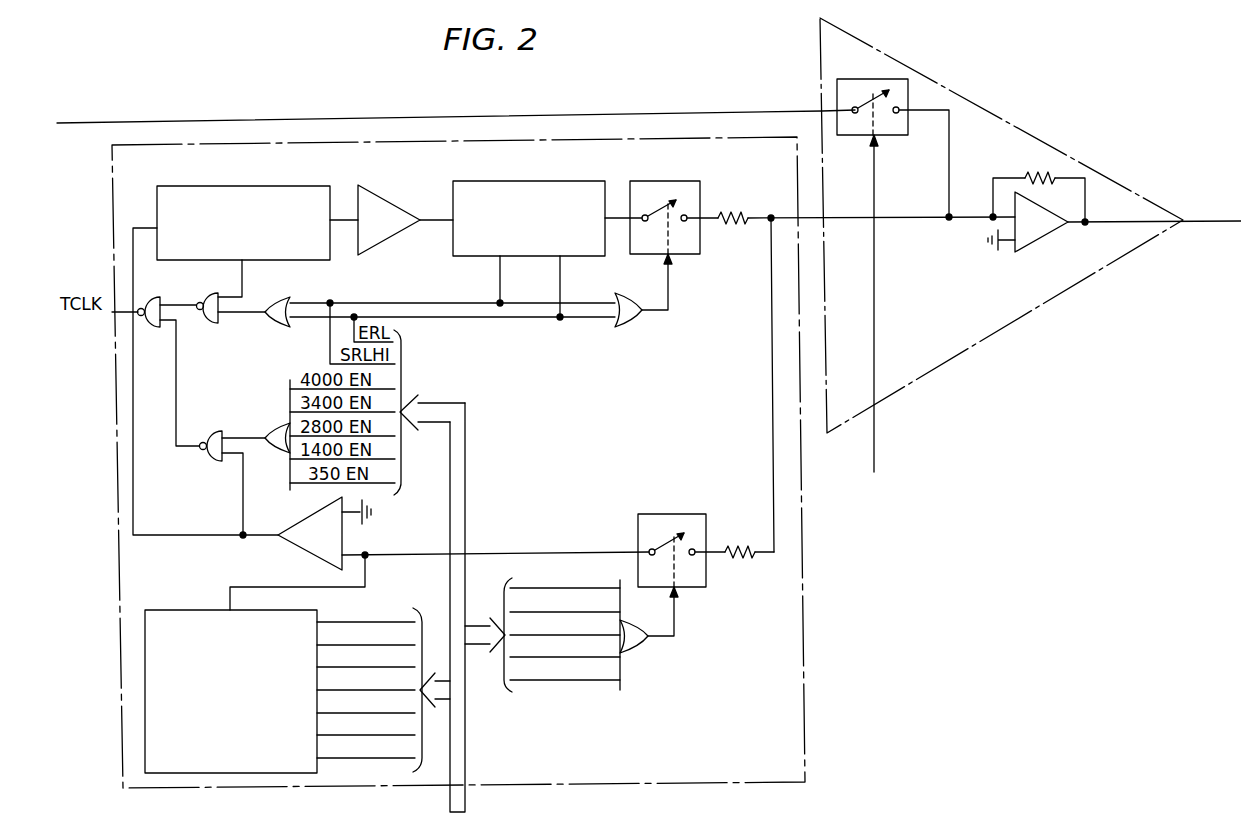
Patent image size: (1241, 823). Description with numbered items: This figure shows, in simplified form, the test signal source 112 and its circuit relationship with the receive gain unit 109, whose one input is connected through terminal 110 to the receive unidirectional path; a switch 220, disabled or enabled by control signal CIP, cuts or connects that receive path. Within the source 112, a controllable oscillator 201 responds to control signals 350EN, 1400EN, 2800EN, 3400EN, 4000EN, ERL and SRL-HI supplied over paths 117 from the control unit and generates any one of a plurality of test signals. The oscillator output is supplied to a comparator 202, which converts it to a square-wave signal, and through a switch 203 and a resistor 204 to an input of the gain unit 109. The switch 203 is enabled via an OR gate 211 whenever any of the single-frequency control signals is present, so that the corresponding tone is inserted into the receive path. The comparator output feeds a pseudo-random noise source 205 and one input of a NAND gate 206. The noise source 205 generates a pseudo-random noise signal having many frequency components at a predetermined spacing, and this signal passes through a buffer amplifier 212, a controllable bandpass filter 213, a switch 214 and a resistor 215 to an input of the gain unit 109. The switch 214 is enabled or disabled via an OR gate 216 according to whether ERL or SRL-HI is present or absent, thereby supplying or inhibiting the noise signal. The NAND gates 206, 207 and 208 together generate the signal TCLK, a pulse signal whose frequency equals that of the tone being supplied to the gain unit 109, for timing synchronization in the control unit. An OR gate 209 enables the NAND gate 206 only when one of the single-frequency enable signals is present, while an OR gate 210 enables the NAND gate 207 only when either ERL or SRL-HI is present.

The gain unit 109 is at (996, 112).
The terminal 110 is at (102, 123).
The test signal source 112 is at (112, 180).
The paths 117 is at (478, 798).
The controllable oscillator 201 is at (170, 610).
The comparator 202 is at (296, 548).
The switch 203 is at (676, 502).
The resistor 204 is at (742, 545).
The pseudo-random noise source 205 is at (232, 186).
The NAND gate 206 is at (207, 462).
The NAND gate 207 is at (212, 326).
The NAND gate 208 is at (153, 300).
The OR gate 209 is at (278, 430).
The OR gate 210 is at (278, 297).
The OR gate 211 is at (640, 650).
The buffer amplifier 212 is at (396, 240).
The controllable bandpass filter 213 is at (480, 257).
The switch 214 is at (661, 181).
The resistor 215 is at (738, 208).
The OR gate 216 is at (632, 320).
The switch 220 is at (860, 79).